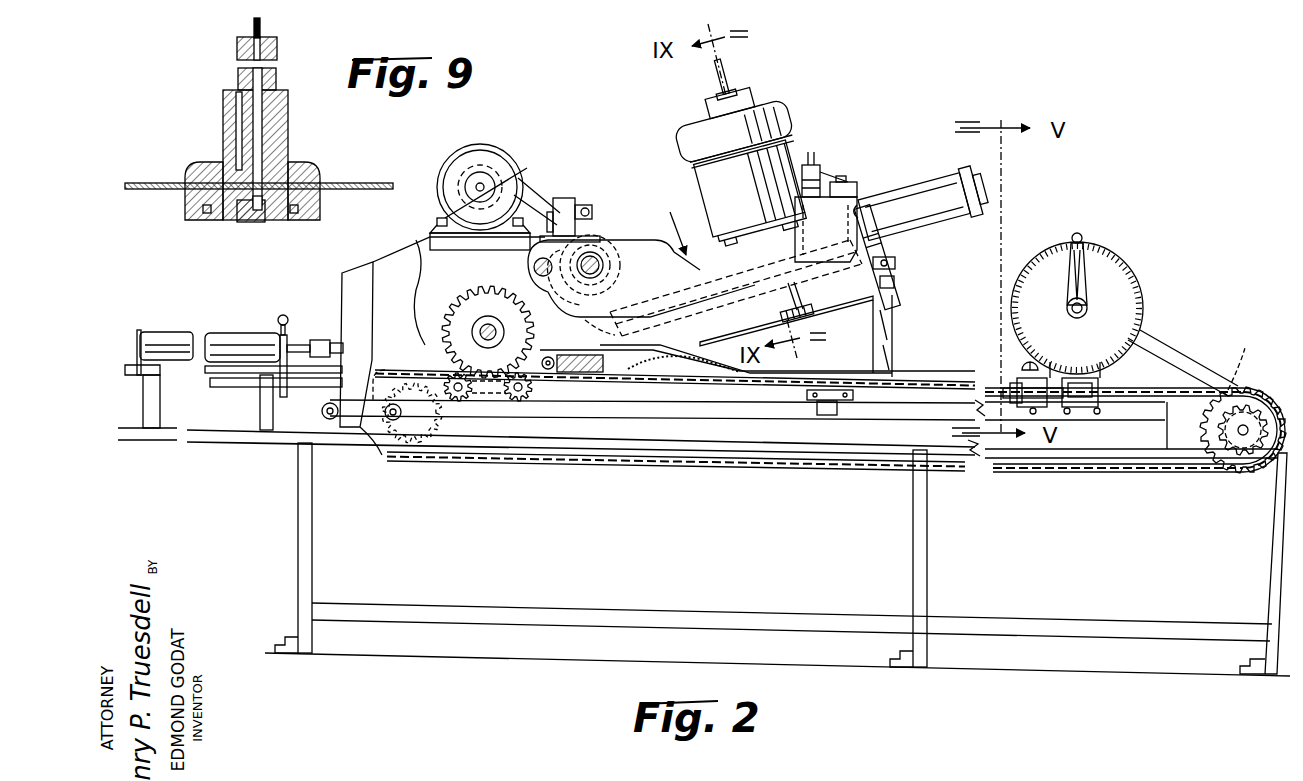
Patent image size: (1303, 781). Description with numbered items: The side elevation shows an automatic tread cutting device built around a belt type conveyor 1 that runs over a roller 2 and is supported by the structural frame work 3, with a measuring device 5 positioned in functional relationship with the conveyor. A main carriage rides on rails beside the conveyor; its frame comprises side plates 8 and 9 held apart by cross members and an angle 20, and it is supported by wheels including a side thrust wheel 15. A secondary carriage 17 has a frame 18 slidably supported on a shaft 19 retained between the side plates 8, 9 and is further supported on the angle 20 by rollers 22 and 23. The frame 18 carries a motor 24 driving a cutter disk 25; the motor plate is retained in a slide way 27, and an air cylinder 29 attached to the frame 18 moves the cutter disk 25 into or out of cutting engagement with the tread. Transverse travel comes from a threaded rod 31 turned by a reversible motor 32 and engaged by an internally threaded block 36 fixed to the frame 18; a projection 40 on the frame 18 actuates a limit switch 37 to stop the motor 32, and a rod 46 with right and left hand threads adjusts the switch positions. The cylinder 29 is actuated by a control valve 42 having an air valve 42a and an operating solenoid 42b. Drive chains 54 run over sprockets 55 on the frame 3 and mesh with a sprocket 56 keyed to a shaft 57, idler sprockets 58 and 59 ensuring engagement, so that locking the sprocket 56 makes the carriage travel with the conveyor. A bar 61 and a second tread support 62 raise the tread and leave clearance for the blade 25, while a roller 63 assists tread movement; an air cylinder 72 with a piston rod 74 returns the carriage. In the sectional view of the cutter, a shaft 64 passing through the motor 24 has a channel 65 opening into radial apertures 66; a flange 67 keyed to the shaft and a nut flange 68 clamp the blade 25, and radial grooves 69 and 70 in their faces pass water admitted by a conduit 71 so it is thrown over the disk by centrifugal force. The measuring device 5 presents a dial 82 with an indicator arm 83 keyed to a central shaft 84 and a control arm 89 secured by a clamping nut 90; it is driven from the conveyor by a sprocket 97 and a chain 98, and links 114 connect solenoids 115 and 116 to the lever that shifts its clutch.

In FIG. 2, the belt type conveyor 1 is at (1262, 400).
In FIG. 2, the roller 2 is at (1264, 408).
In FIG. 2, the structural frame work 3 is at (922, 568).
In FIG. 2, the measuring device 5 is at (1099, 276).
In FIG. 2, the side plate 8 is at (388, 265).
In FIG. 2, the side plate 9 is at (420, 248).
In FIG. 2, the side thrust wheel 15 is at (833, 415).
In FIG. 2, the secondary carriage 17 is at (671, 223).
In FIG. 2, the frame 18 is at (633, 273).
In FIG. 2, the shaft 19 is at (533, 271).
In FIG. 2, the structural angle 20 is at (896, 266).
In FIG. 2, the roller 22 is at (884, 225).
In FIG. 2, the roller 23 is at (895, 284).
In FIG. 2, the motor 24 is at (705, 190).
In FIG. 9, the cutter disk 25 is at (357, 182).
In FIG. 2, the cutter disk 25 is at (725, 338).
In FIG. 2, the slide way 27 is at (676, 308).
In FIG. 2, the air cylinder 29 is at (915, 200).
In FIG. 2, the threaded rod 31 is at (596, 256).
In FIG. 2, the reversible motor 32 is at (478, 160).
In FIG. 2, the internally threaded block 36 is at (605, 330).
In FIG. 2, the limit switch 37 is at (556, 198).
In FIG. 2, the projection 40 is at (532, 180).
In FIG. 2, the control valve 42 is at (830, 182).
In FIG. 2, the air valve 42a is at (845, 195).
In FIG. 2, the operating solenoid 42b is at (811, 165).
In FIG. 2, the rod 46 is at (584, 205).
In FIG. 2, the drive chain 54 is at (768, 470).
In FIG. 2, the sprocket 55 is at (423, 418).
In FIG. 2, the sprocket 56 is at (457, 302).
In FIG. 2, the shaft 57 is at (505, 334).
In FIG. 2, the idler sprocket 58 is at (458, 402).
In FIG. 2, the idler sprocket 59 is at (520, 402).
In FIG. 2, the bar 61 is at (585, 374).
In FIG. 2, the second tread support 62 is at (667, 360).
In FIG. 2, the roller 63 is at (549, 372).
In FIG. 9, the shaft 64 is at (278, 50).
In FIG. 2, the shaft 64 is at (744, 92).
In FIG. 9, the channel 65 is at (238, 77).
In FIG. 9, the radial apertures 66 is at (245, 222).
In FIG. 9, the flange 67 is at (223, 130).
In FIG. 2, the flange 67 is at (785, 292).
In FIG. 9, the nut flange 68 is at (200, 213).
In FIG. 2, the nut flange 68 is at (812, 318).
In FIG. 9, the radial groove 69 is at (195, 168).
In FIG. 9, the radial groove 70 is at (190, 205).
In FIG. 9, the conduit 71 is at (253, 22).
In FIG. 2, the conduit 71 is at (716, 74).
In FIG. 2, the air cylinder 72 is at (245, 340).
In FIG. 2, the piston rod 74 is at (290, 340).
In FIG. 2, the dial 82 is at (1132, 283).
In FIG. 2, the indicator arm 83 is at (1082, 270).
In FIG. 2, the central shaft 84 is at (1090, 306).
In FIG. 2, the control arm 89 is at (1086, 240).
In FIG. 2, the clamping nut 90 is at (1072, 237).
In FIG. 2, the sprocket 97 is at (1243, 398).
In FIG. 2, the chain 98 is at (1185, 360).
In FIG. 2, the links 114 is at (1022, 380).
In FIG. 2, the solenoid 115 is at (1008, 392).
In FIG. 2, the solenoid 116 is at (1082, 400).